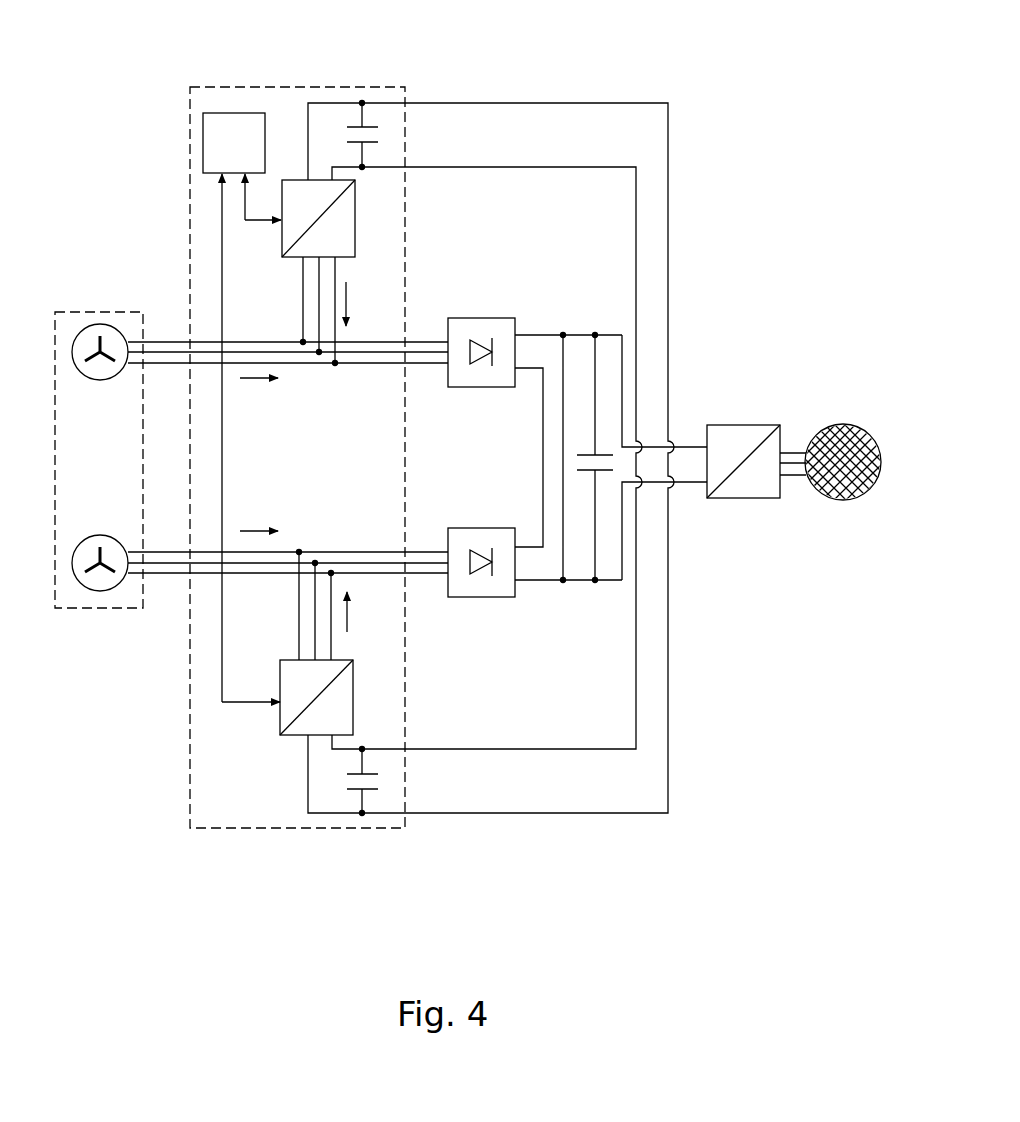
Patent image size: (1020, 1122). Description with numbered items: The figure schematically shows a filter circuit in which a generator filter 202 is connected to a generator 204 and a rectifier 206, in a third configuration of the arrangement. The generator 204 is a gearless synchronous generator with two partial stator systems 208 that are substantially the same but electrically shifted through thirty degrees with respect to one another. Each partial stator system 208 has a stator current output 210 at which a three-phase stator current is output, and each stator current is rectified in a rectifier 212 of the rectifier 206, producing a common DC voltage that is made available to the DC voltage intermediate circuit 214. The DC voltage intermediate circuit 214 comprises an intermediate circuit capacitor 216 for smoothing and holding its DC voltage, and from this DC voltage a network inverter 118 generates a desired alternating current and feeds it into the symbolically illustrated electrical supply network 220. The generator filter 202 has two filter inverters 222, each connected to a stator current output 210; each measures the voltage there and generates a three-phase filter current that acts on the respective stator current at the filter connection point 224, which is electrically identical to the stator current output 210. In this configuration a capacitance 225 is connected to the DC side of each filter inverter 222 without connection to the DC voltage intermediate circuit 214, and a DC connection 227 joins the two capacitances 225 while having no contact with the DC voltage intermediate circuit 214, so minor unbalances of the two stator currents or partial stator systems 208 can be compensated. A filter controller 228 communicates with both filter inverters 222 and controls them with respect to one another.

The network inverter 118 is at (748, 404).
The generator filter 202 is at (317, 848).
The generator 204 is at (95, 632).
The rectifier 206 is at (522, 632).
The partial stator system 208 is at (93, 323).
The stator current output 210 is at (165, 338).
The rectifier 212 is at (482, 323).
The DC voltage intermediate circuit 214 is at (595, 318).
The intermediate circuit capacitor 216 is at (603, 448).
The electrical supply network 220 is at (843, 410).
The filter inverter 222 is at (292, 262).
The filter connection point 224 is at (318, 378).
The capacitance 225 is at (388, 137).
The DC connection 227 is at (638, 82).
The filter controller 228 is at (238, 112).